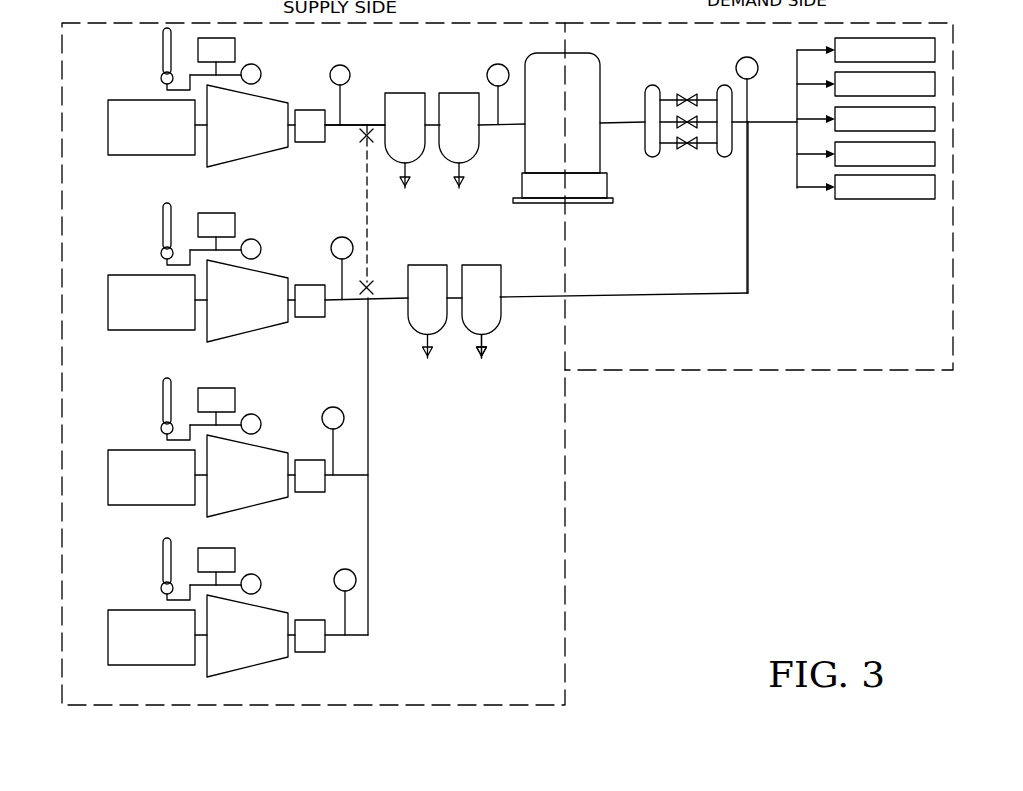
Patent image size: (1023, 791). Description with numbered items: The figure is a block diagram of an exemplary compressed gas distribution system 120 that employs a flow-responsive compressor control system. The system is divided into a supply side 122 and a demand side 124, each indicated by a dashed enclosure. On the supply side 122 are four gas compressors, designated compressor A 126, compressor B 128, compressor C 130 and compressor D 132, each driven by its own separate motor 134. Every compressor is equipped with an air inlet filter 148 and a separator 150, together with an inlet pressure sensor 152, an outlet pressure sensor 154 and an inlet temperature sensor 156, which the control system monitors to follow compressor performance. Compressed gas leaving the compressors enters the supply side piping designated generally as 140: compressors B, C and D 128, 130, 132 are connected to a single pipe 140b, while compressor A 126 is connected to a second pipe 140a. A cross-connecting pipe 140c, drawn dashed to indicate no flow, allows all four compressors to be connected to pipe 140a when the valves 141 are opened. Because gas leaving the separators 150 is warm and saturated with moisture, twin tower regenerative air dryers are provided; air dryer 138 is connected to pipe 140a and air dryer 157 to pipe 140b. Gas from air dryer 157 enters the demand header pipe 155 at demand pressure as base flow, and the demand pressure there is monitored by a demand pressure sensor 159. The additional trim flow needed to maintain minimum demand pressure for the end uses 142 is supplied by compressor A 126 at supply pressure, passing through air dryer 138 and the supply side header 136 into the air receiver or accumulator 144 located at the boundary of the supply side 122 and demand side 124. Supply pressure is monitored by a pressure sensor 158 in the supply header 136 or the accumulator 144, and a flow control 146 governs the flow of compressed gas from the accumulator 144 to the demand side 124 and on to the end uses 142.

The compressed gas distribution system 120 is at (774, 473).
The supply side 122 is at (565, 460).
The demand side 124 is at (745, 372).
The compressor A 126 is at (288, 147).
The compressor B 128 is at (287, 322).
The compressor C 130 is at (287, 495).
The compressor D 132 is at (288, 655).
The motor 134 is at (116, 100).
The supply side header 136 is at (511, 127).
The air dryer 138 is at (427, 74).
The supply side piping 140 is at (432, 488).
The second pipe 140a is at (355, 124).
The single pipe 140b is at (368, 466).
The pipe 140c is at (367, 226).
The valves 141 is at (368, 138).
The end uses 142 is at (937, 45).
The accumulator 144 is at (602, 150).
The flow control 146 is at (692, 147).
The air inlet filter 148 is at (235, 49).
The separator 150 is at (301, 110).
The inlet pressure sensor 152 is at (262, 67).
The outlet pressure sensor 154 is at (343, 65).
The demand header pipe 155 is at (749, 124).
The inlet temperature sensor 156 is at (160, 67).
The air dryer 157 is at (474, 360).
The pressure sensor 158 is at (488, 67).
The demand pressure sensor 159 is at (740, 60).